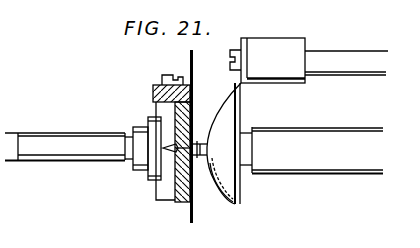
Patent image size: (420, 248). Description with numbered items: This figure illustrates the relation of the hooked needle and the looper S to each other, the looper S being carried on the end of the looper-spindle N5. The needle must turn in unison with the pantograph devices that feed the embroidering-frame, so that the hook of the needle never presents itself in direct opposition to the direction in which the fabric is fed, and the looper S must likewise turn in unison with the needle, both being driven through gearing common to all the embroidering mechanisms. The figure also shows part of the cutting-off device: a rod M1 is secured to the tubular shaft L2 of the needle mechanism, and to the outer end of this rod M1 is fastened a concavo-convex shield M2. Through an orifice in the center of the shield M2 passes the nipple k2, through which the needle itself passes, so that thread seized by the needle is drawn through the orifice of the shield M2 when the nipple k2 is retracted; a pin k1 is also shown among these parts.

The looper-spindle N5 is at (69, 147).
The looper S is at (147, 148).
The pin k1 is at (176, 157).
The nipple k2 is at (200, 161).
The concavo-convex shield M2 is at (224, 143).
The rod M1 is at (309, 60).
The tubular shaft L2 is at (311, 150).